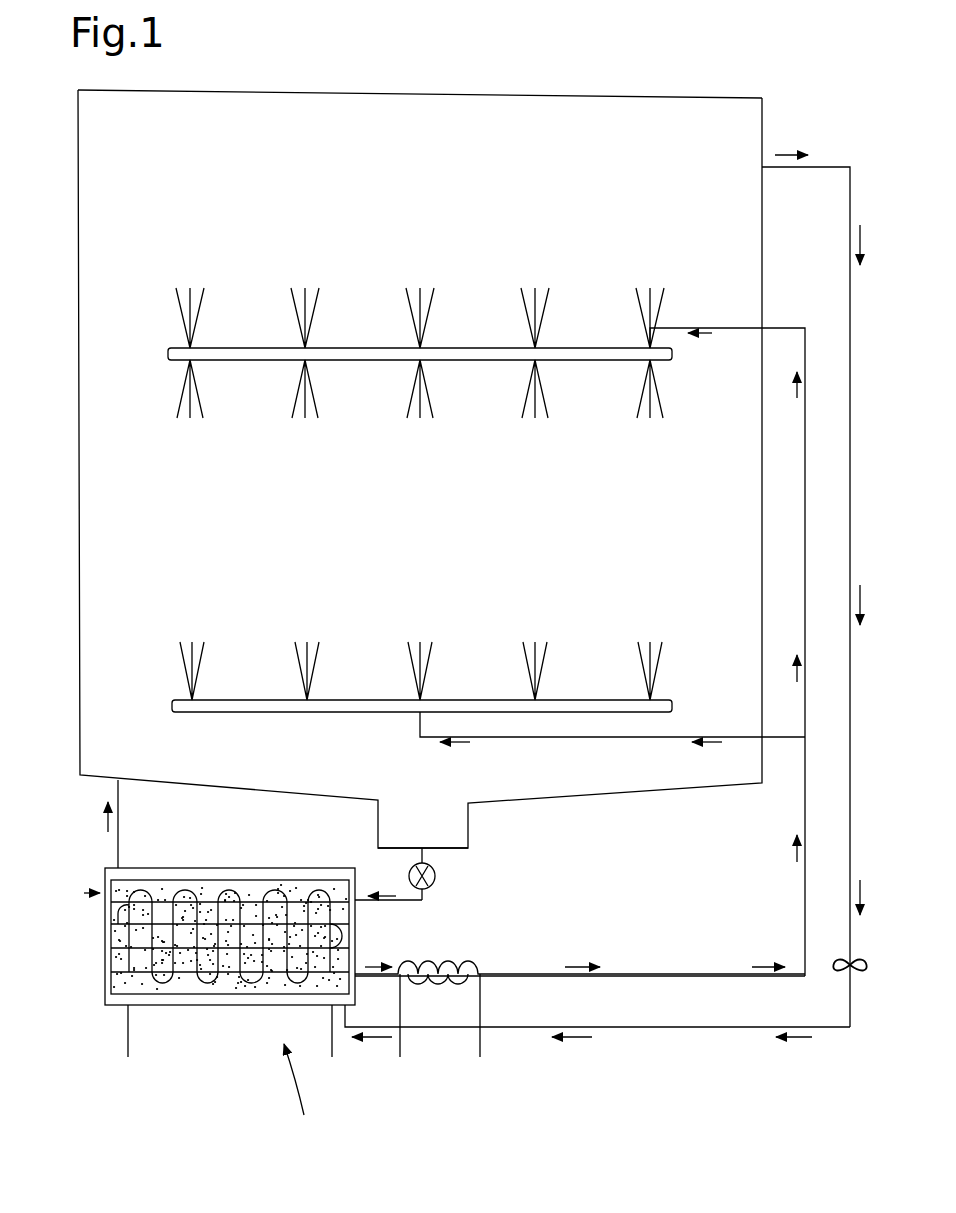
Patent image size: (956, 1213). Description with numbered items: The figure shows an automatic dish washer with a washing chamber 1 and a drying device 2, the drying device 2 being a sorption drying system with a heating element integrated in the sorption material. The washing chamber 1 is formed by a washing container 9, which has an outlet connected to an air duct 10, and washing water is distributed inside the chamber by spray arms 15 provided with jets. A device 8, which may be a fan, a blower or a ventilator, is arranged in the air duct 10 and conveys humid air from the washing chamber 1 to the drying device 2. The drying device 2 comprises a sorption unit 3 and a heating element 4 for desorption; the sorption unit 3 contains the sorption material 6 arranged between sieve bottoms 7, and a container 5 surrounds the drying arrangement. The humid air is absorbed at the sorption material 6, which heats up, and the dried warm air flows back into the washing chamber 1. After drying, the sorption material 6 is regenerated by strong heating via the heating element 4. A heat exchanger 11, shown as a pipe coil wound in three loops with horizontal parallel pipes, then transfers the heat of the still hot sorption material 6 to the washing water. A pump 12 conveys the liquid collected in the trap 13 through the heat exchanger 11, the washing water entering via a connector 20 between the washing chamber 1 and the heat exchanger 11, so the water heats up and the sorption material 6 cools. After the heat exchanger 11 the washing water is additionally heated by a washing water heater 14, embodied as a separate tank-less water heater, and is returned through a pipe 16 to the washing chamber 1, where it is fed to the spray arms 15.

The washing chamber 1 is at (448, 503).
The drying device 2 is at (297, 1095).
The sorption unit 3 is at (190, 1002).
The heating element 4 is at (124, 1008).
The container 5 is at (226, 1004).
The sorption material 6 is at (239, 1004).
The sieve bottoms 7 is at (294, 885).
The device 8 is at (842, 975).
The washing container 9 is at (727, 98).
The air duct 10 is at (833, 165).
The heat exchanger 11 is at (100, 988).
The pump 12 is at (434, 871).
The trap 13 is at (448, 823).
The washing water heater 14 is at (401, 1058).
The spray arms 15 is at (385, 357).
The pipe 16 is at (703, 976).
The connector 20 is at (390, 910).